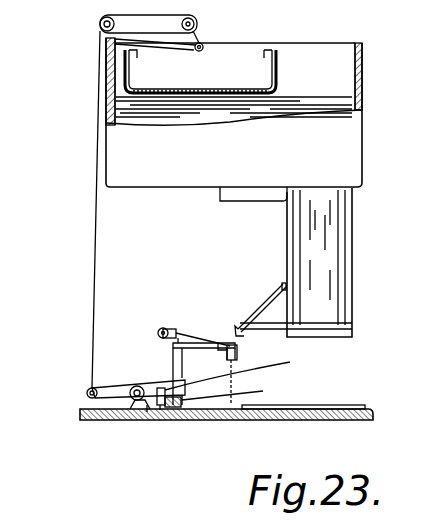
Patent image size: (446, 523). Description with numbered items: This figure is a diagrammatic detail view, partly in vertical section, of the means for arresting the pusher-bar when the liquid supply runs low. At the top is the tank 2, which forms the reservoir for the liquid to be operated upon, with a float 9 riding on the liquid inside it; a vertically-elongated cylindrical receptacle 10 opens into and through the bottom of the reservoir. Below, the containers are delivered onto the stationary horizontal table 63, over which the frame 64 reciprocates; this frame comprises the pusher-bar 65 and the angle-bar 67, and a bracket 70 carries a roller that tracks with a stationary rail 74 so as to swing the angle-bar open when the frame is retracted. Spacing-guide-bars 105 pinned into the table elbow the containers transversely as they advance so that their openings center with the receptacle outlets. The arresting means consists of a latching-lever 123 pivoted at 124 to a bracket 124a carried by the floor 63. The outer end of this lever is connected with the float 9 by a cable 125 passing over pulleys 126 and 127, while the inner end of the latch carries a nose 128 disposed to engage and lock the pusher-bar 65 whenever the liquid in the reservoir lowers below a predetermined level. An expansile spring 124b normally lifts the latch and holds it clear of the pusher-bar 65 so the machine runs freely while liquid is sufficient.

The tank 2 is at (364, 100).
The float 9 is at (277, 70).
The receptacle 10 is at (296, 262).
The table 63 is at (350, 421).
The frame 64 is at (204, 364).
The pusher-bar 65 is at (232, 390).
The angle-bar 67 is at (237, 352).
The bracket 70 is at (194, 331).
The rail 74 is at (260, 309).
The spacing-guide-bars 105 is at (349, 409).
The latching-lever 123 is at (143, 380).
The pivot 124 is at (140, 401).
The bracket 124a is at (145, 413).
The expansile spring 124b is at (163, 410).
The cable 125 is at (96, 268).
The pulley 126 is at (100, 24).
The pulley 127 is at (203, 44).
The nose 128 is at (239, 370).